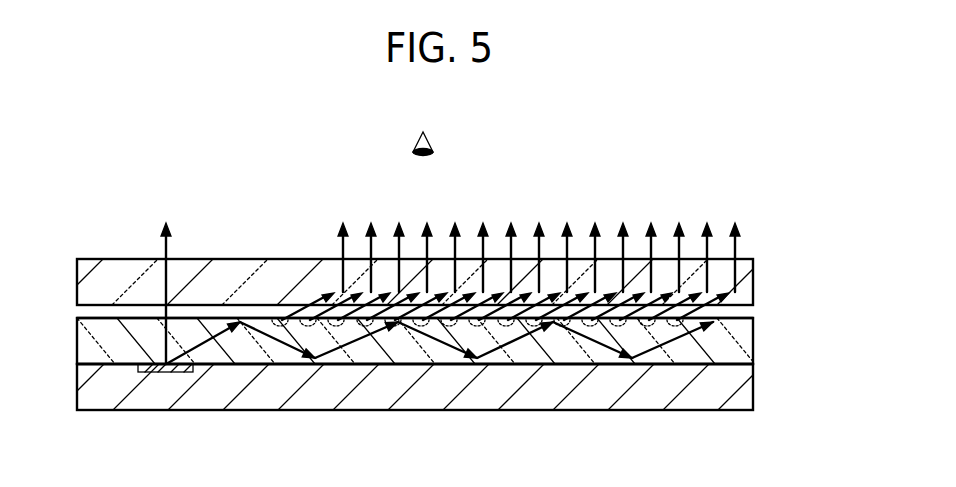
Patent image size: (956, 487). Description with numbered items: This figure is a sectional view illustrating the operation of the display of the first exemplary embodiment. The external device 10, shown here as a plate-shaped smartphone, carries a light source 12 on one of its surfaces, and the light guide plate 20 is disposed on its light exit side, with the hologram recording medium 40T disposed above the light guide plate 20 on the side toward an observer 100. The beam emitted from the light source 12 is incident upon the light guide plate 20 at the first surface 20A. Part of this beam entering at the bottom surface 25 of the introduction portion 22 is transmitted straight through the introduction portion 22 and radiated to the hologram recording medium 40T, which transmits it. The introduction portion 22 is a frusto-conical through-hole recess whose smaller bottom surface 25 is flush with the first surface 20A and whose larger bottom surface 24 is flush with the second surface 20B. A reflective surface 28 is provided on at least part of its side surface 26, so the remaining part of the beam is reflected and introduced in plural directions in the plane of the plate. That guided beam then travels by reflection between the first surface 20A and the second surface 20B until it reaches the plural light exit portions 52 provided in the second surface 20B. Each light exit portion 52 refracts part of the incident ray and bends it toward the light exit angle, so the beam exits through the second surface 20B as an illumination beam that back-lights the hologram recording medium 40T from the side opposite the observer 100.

The observer 100 is at (432, 142).
The external device 10 is at (753, 396).
The light source 12 is at (172, 369).
The light guide plate 20 is at (753, 342).
The first surface 20A is at (753, 366).
The second surface 20B is at (753, 318).
The introduction portion 22 is at (186, 314).
The bottom surface 24 is at (140, 317).
The bottom surface 25 is at (140, 368).
The side surface 26 is at (440, 342).
The reflective surface 28 is at (218, 321).
The hologram recording medium 40T is at (753, 280).
The light exit portions 52 is at (503, 326).